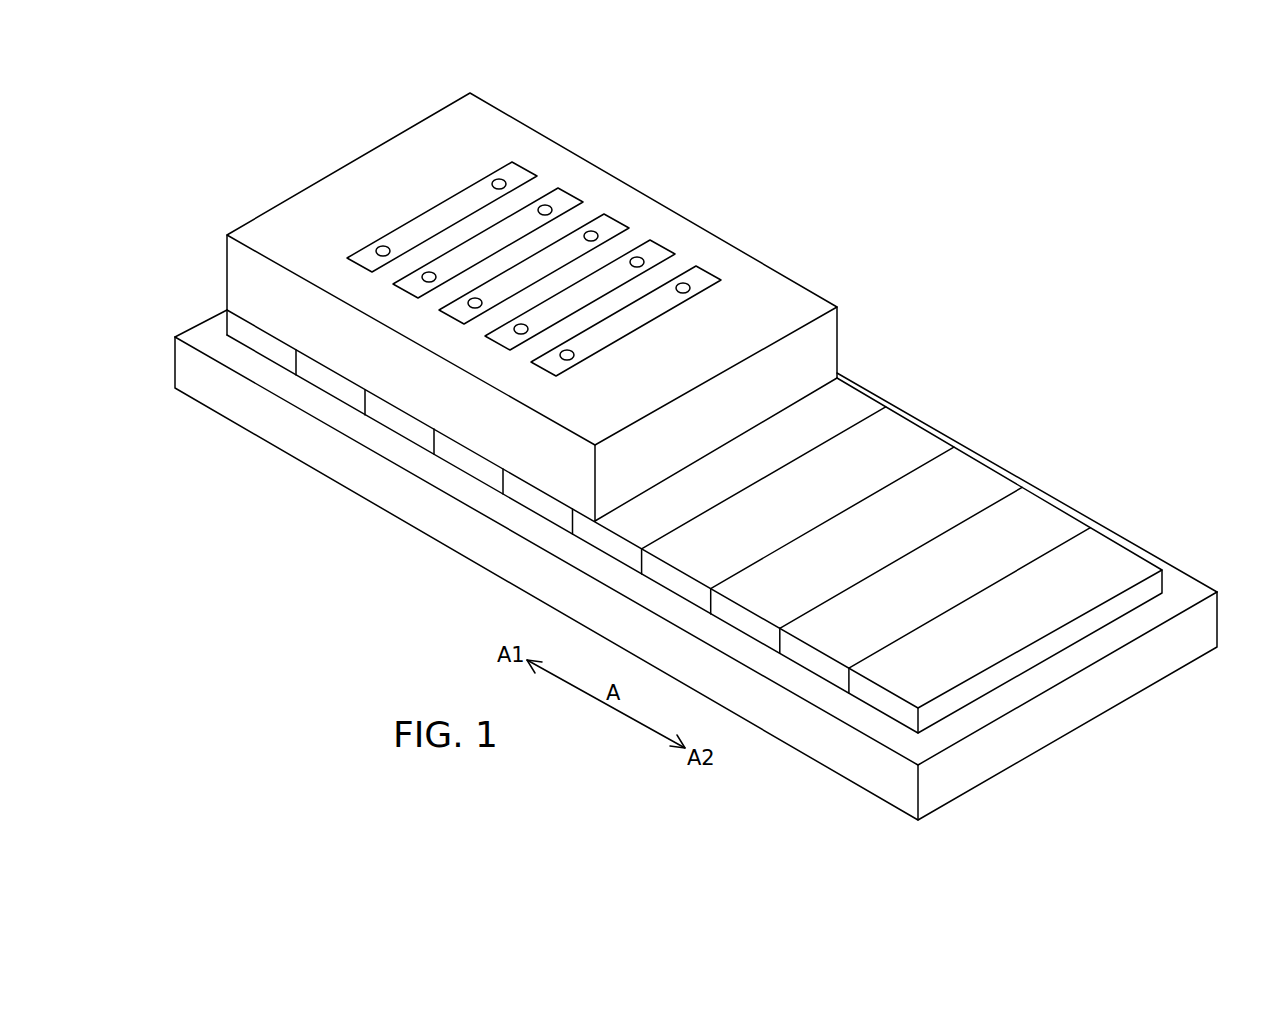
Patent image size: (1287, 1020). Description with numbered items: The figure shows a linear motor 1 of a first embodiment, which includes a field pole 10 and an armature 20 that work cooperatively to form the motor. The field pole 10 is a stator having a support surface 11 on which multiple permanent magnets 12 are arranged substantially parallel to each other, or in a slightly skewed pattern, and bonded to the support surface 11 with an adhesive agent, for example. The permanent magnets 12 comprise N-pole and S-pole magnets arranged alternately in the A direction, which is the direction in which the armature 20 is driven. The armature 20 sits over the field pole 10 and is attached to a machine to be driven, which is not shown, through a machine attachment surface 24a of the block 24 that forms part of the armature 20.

The linear motor 1 is at (1035, 137).
The field pole 10 is at (1040, 450).
The support surface 11 is at (1188, 595).
The permanent magnets 12 is at (855, 410).
The armature 20 is at (648, 194).
The block 24 is at (575, 266).
The machine attachment surface 24a is at (654, 251).